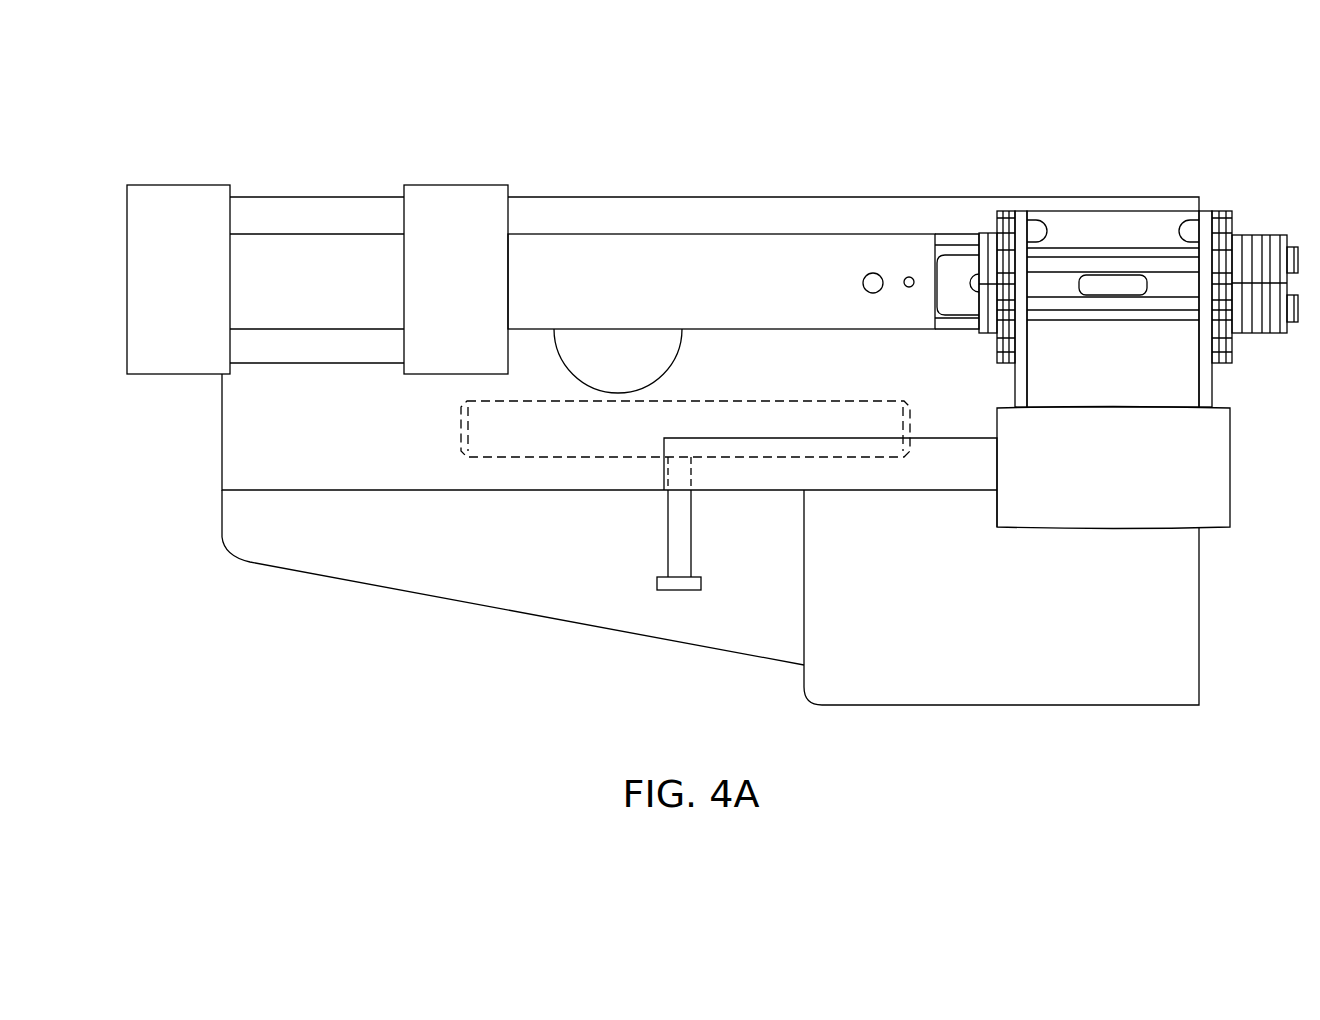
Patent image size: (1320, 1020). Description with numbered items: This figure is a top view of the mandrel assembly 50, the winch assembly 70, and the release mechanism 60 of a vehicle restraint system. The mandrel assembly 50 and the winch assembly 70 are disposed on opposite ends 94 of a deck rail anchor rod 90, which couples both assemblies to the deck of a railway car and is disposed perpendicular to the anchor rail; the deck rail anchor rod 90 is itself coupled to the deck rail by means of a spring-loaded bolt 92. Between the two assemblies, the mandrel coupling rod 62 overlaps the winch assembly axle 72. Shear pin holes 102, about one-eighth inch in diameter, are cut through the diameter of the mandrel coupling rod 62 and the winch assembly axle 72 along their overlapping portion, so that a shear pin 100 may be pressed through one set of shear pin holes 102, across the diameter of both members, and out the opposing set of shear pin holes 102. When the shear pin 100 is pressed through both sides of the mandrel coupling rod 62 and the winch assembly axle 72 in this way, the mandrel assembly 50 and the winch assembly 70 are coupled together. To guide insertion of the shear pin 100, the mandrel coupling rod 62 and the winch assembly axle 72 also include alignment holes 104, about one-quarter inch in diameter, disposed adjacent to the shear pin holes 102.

The mandrel assembly 50 is at (178, 165).
The release mechanism 60 is at (666, 222).
The mandrel coupling rod 62 is at (748, 311).
The winch assembly 70 is at (1251, 195).
The winch assembly axle 72 is at (1116, 304).
The deck rail anchor rod 90 is at (436, 470).
The spring-loaded bolt 92 is at (797, 402).
The opposite ends 94 is at (245, 527).
The shear pin 100 is at (905, 289).
The shear pin holes 102 is at (910, 290).
The alignment holes 104 is at (862, 284).